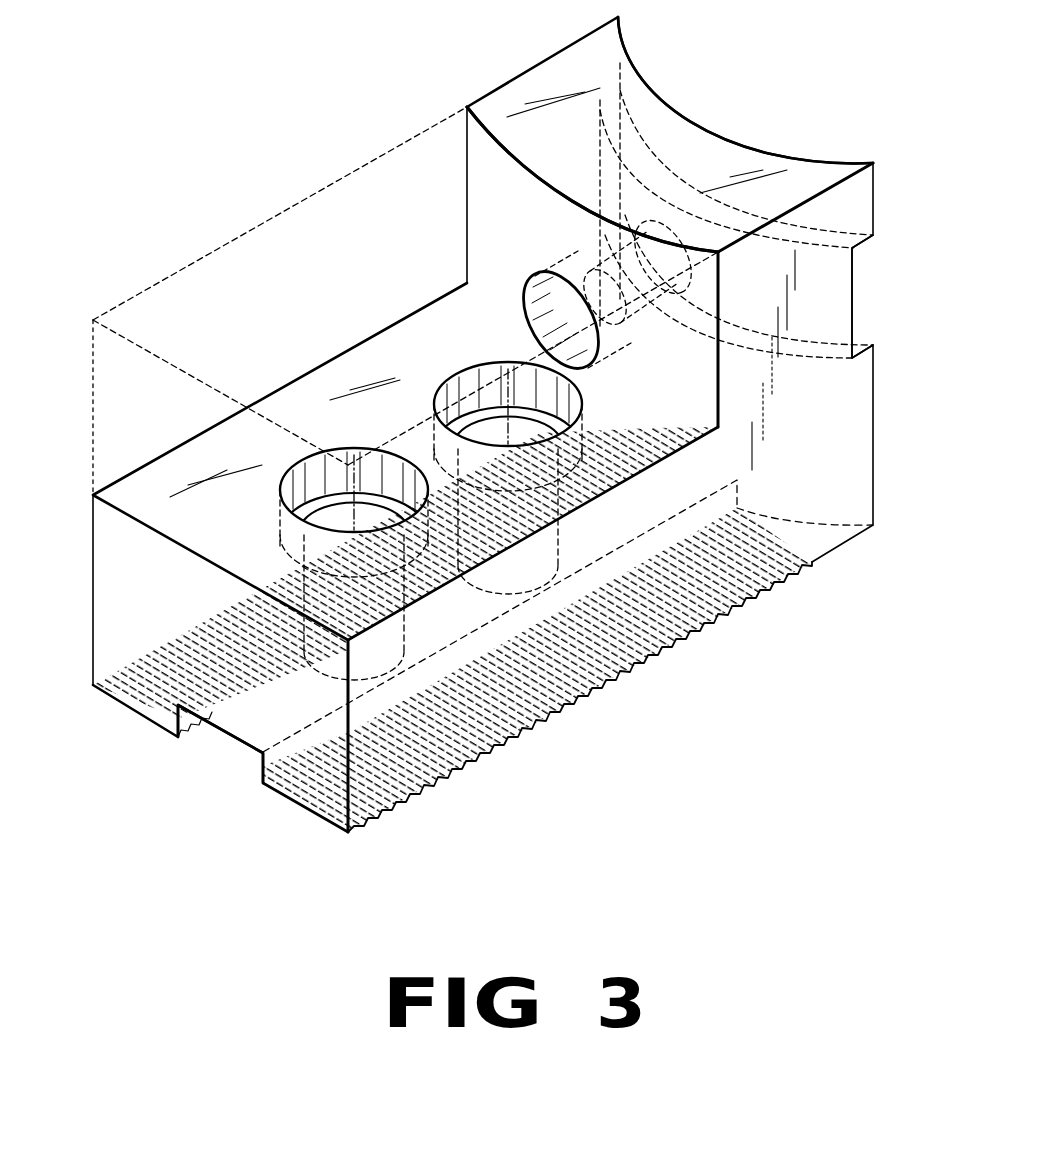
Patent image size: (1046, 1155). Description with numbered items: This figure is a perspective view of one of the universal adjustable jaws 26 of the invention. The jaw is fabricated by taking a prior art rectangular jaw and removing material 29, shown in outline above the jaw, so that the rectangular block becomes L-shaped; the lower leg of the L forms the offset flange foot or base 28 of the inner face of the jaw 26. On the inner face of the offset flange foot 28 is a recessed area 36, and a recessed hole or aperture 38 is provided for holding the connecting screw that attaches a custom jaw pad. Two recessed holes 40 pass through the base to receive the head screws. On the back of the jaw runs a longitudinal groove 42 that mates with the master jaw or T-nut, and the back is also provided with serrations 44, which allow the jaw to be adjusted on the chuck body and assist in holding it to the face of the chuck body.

The universal jaws 26 is at (810, 537).
The offset flange foot 28 is at (690, 147).
The removed material 29 is at (162, 305).
The recess 36 is at (848, 302).
The holes for connecting screws 38 is at (592, 340).
The holes for head screws 40 is at (375, 470).
The groove of jaw 42 is at (240, 742).
The serrated face of jaw 44 is at (447, 777).